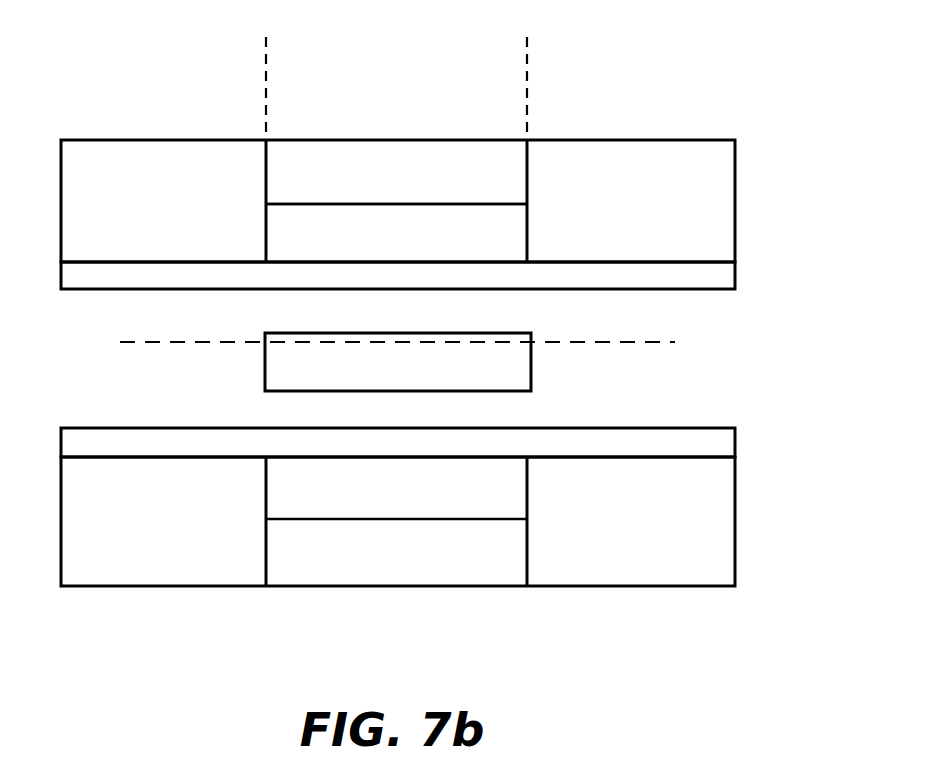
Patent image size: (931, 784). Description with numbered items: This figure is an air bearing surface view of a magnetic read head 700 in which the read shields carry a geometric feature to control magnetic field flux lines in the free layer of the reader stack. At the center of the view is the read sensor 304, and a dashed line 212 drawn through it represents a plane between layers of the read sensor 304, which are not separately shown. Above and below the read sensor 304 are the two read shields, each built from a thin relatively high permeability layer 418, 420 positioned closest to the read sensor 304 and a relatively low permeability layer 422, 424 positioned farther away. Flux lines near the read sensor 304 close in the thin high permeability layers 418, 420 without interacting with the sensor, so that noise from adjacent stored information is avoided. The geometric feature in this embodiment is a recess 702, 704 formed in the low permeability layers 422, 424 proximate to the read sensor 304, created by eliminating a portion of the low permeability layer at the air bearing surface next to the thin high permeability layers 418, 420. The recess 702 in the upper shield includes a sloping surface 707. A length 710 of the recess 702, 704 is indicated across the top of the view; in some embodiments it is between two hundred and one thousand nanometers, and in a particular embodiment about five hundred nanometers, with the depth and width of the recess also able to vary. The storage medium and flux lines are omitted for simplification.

The head 700 is at (716, 117).
The recess 702 is at (430, 168).
The recess 704 is at (375, 564).
The sloping surface 707 is at (501, 222).
The length of the recess 710 is at (266, 54).
The dashed line 212 is at (158, 343).
The read sensor 304 is at (307, 368).
The thin high permeability layer 418 is at (303, 287).
The thin high permeability layer 420 is at (305, 453).
The low permeability layer 422 is at (153, 185).
The low permeability layer 424 is at (153, 558).